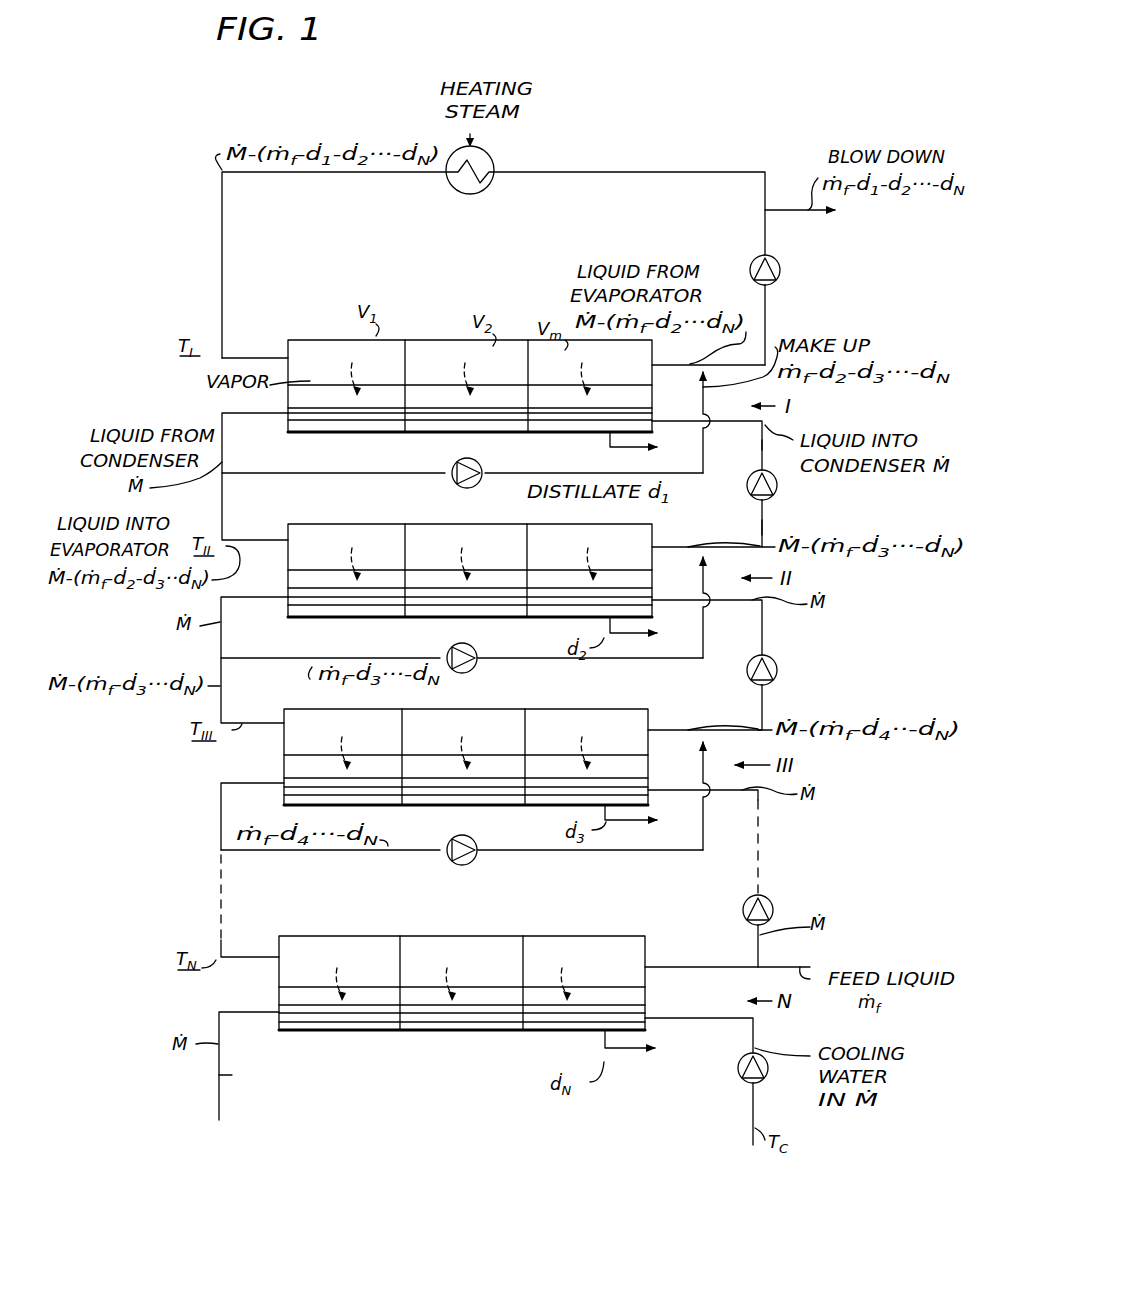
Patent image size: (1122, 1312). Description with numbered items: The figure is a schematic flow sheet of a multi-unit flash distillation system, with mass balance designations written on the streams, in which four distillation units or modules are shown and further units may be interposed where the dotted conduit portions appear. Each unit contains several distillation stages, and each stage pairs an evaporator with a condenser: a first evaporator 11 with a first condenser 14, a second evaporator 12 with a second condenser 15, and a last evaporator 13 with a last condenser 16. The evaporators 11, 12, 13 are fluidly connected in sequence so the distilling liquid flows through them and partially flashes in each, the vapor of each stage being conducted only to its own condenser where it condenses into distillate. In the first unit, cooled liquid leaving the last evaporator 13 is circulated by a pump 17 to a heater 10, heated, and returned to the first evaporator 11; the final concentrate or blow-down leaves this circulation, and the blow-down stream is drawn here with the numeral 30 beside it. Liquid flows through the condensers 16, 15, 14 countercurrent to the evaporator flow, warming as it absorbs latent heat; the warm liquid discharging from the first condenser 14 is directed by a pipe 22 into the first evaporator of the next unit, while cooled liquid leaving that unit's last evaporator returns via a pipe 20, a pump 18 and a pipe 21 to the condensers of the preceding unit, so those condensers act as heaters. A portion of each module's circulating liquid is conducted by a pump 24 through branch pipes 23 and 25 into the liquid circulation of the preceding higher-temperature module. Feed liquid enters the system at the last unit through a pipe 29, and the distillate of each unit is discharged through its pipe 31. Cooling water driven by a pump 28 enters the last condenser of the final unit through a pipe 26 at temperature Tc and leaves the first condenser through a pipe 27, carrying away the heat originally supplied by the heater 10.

The heater 10 is at (483, 190).
The evaporator 11 is at (340, 339).
The evaporator 12 is at (430, 356).
The evaporator 13 is at (532, 345).
The condenser 14 is at (366, 435).
The condenser 15 is at (452, 435).
The condenser 16 is at (580, 435).
The pump 17 is at (786, 250).
The pump 18 is at (747, 488).
The pipe 20 is at (760, 527).
The pipe 21 is at (760, 452).
The pipe 22 is at (222, 497).
The branch pipe 23 is at (266, 465).
The pump 24 is at (490, 455).
The branch pipe 25 is at (690, 487).
The pipe 26 is at (753, 1030).
The pipe 27 is at (240, 1077).
The pump 28 is at (740, 1078).
The pipe 29 is at (778, 967).
The blow down line 30 is at (795, 212).
The pipe 31 is at (640, 640).